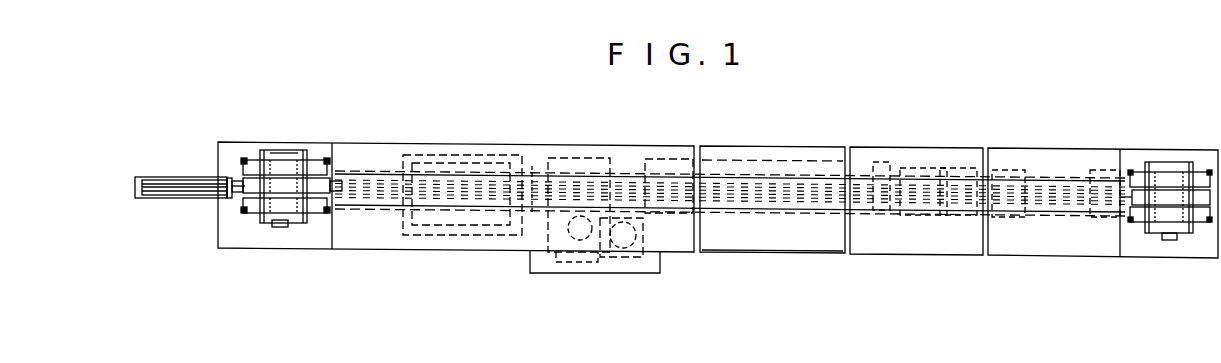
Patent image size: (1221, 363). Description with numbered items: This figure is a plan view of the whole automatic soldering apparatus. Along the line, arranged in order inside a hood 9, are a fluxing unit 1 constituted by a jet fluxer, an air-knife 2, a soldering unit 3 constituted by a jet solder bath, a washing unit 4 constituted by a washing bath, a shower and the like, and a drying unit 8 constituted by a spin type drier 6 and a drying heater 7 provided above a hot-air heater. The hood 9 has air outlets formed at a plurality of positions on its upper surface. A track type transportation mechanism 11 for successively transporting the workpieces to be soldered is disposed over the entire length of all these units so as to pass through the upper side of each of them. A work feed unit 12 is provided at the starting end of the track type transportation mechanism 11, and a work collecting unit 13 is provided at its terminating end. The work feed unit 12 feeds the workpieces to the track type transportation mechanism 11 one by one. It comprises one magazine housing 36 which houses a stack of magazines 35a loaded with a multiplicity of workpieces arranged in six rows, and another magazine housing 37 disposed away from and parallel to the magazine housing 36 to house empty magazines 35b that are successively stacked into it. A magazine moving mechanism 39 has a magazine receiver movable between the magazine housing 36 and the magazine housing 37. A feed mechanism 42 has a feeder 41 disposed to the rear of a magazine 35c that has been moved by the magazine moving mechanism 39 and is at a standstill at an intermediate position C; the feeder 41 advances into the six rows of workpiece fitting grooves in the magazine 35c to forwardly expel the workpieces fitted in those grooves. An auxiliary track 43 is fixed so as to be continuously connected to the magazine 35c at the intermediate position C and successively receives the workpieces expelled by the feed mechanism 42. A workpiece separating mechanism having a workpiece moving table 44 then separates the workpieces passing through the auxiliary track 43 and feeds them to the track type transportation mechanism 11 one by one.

The fluxing unit 1 is at (463, 155).
The air-knife 2 is at (532, 168).
The soldering unit 3 is at (582, 158).
The washing unit 4 is at (780, 160).
The spin type drier 6 is at (890, 168).
The drying heater 7 is at (970, 170).
The drying unit 8 is at (937, 160).
The hood 9 is at (822, 160).
The track type transportation mechanism 11 is at (740, 178).
The work feed unit 12 is at (277, 193).
The work collecting unit 13 is at (1140, 157).
The magazines 35a is at (247, 215).
The empty magazines 35b is at (245, 162).
The magazine 35c is at (255, 196).
The magazine housing 36 is at (245, 205).
The magazine housing 37 is at (243, 165).
The magazine moving mechanism 39 is at (273, 232).
The feeder 41 is at (170, 182).
The feed mechanism 42 is at (182, 155).
The auxiliary track 43 is at (315, 218).
The workpiece moving table 44 is at (335, 188).
The intermediate position C is at (247, 187).